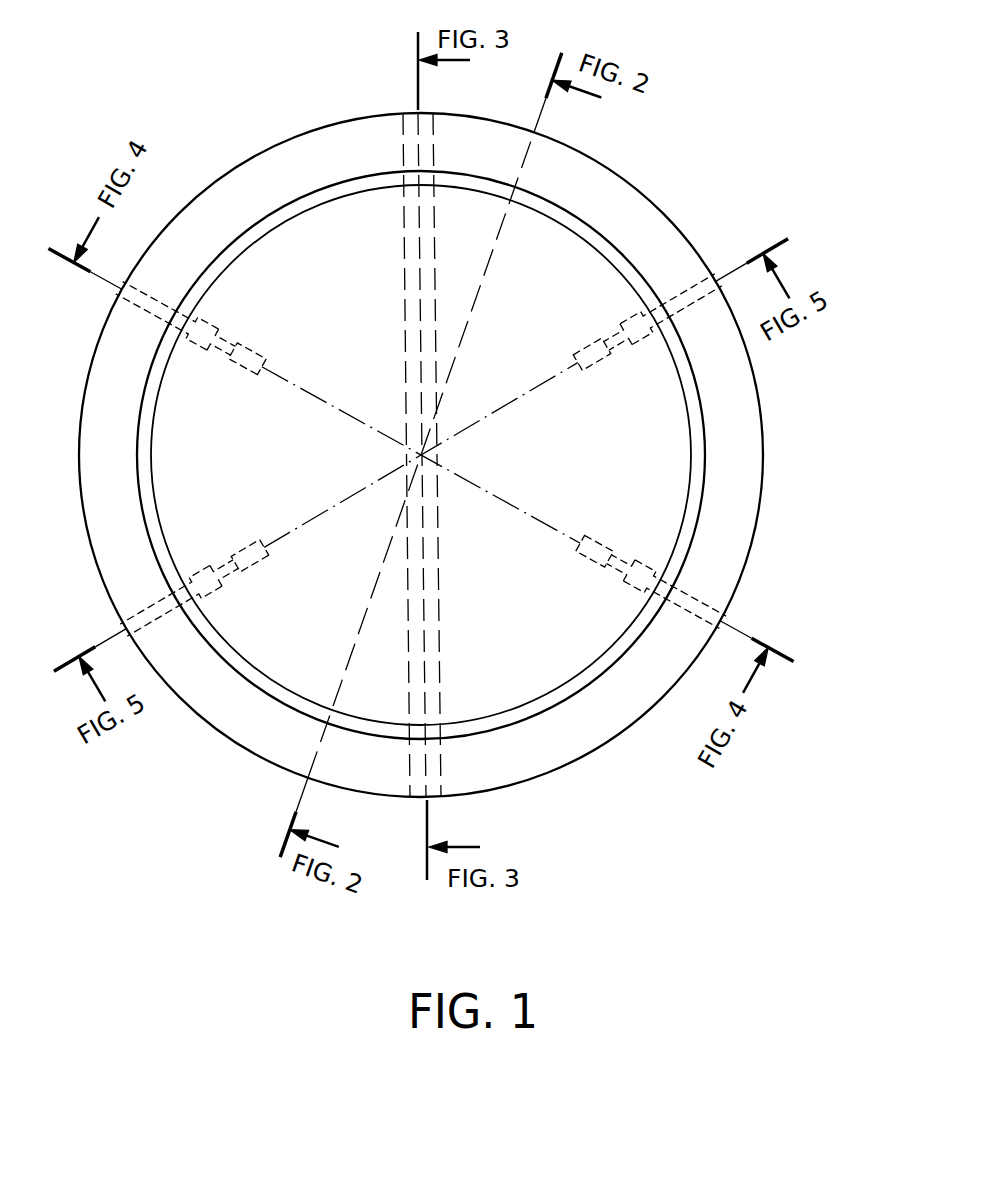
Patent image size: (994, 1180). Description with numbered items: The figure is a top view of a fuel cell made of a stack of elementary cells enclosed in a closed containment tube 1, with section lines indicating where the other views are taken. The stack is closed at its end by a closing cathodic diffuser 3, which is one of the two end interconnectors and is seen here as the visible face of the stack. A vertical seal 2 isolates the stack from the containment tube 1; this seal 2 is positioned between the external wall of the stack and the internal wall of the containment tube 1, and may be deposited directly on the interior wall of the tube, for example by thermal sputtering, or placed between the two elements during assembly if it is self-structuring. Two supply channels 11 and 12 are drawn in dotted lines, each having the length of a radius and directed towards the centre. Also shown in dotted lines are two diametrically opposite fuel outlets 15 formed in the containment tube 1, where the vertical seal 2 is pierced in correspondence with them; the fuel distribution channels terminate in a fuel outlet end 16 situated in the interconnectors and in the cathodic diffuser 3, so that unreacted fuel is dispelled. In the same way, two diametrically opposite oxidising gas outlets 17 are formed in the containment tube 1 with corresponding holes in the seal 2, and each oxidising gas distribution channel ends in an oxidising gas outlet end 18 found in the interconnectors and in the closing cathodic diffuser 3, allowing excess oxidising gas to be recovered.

The containment tube 1 is at (261, 180).
The vertical seal 2 is at (603, 237).
The closing cathodic diffuser 3 is at (270, 648).
The supply channel 11 is at (405, 143).
The supply channel 12 is at (440, 765).
The fuel outlet 15 is at (201, 352).
The fuel outlet end 16 is at (256, 328).
The oxidising gas outlet 17 is at (633, 345).
The oxidising gas outlet end 18 is at (590, 333).